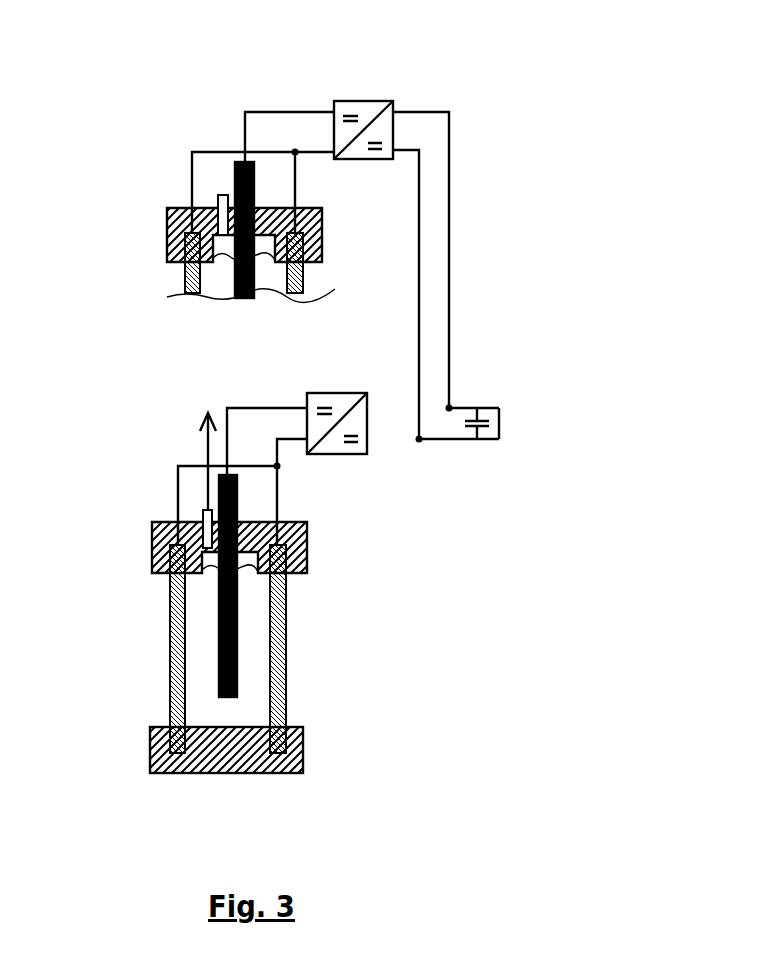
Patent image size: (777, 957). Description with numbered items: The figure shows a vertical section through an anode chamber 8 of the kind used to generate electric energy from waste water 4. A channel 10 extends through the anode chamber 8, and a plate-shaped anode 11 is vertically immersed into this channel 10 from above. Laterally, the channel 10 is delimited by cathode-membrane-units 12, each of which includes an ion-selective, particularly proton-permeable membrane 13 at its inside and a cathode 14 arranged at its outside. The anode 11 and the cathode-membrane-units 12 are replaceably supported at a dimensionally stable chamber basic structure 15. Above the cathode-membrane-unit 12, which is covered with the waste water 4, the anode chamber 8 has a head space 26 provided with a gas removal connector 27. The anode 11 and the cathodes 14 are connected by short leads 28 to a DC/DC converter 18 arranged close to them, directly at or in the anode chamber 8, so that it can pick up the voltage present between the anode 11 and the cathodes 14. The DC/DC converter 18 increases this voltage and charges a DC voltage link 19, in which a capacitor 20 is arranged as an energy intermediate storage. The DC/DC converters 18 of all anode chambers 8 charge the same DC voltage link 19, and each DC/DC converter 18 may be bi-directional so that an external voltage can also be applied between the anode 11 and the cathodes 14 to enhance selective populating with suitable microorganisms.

The waste water 4 is at (205, 703).
The anode chamber 8 is at (150, 210).
The channel 10 is at (253, 665).
The anode 11 is at (238, 492).
The cathode-membrane-unit 12 is at (171, 677).
The membrane 13 is at (172, 587).
The cathode 14 is at (171, 610).
The chamber basic structure 15 is at (158, 527).
The DC/DC converter 18 is at (375, 100).
The DC voltage link 19 is at (477, 405).
The capacitor 20 is at (495, 424).
The head space 26 is at (168, 550).
The gas removal connector 27 is at (202, 510).
The leads 28 is at (189, 464).